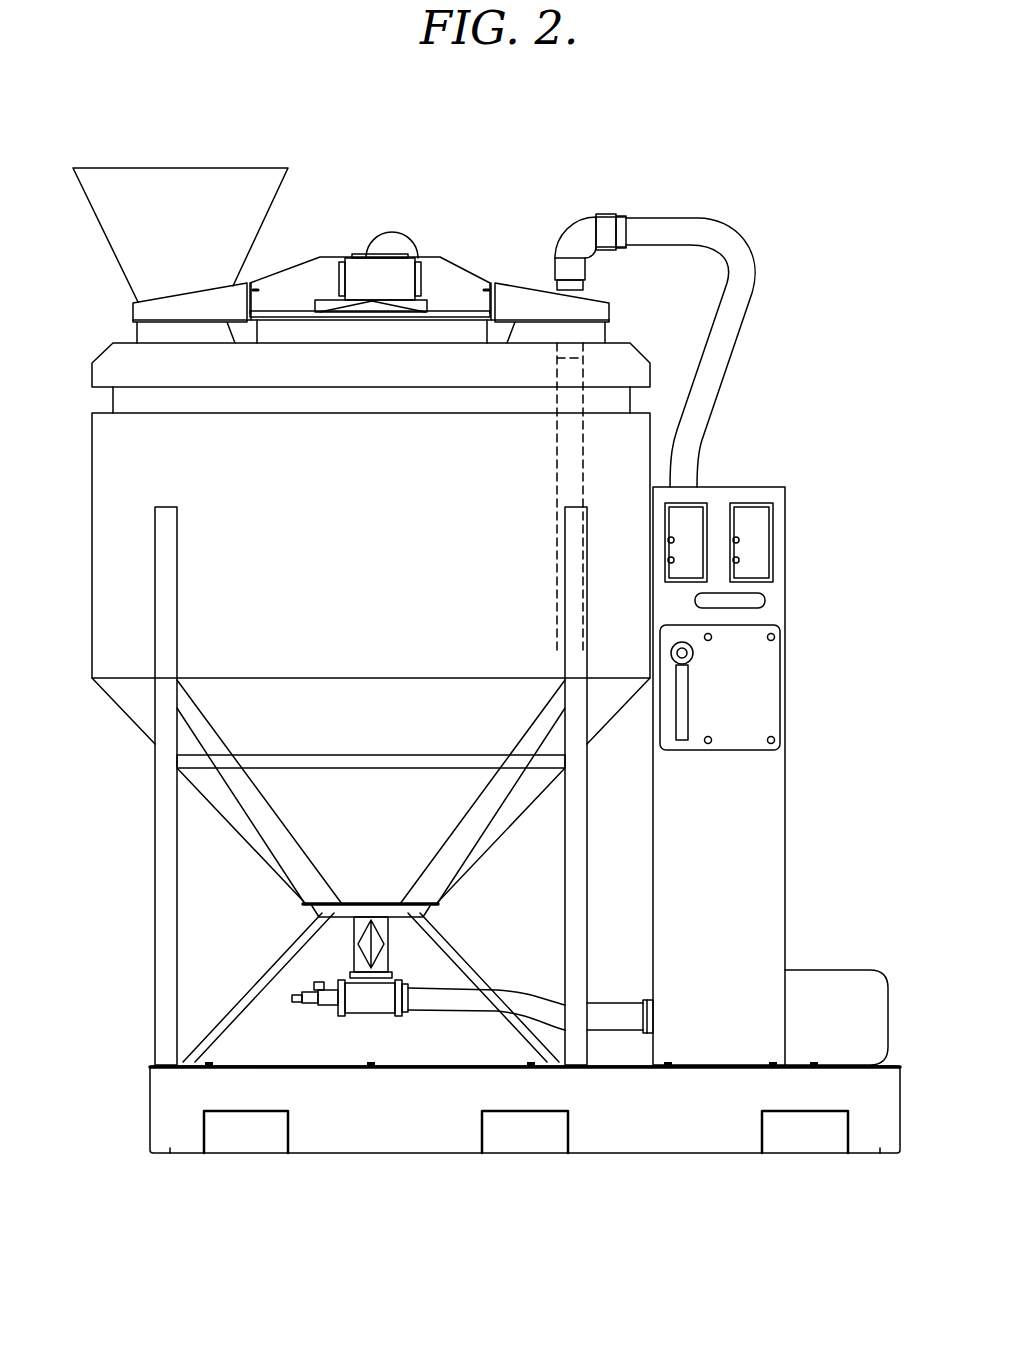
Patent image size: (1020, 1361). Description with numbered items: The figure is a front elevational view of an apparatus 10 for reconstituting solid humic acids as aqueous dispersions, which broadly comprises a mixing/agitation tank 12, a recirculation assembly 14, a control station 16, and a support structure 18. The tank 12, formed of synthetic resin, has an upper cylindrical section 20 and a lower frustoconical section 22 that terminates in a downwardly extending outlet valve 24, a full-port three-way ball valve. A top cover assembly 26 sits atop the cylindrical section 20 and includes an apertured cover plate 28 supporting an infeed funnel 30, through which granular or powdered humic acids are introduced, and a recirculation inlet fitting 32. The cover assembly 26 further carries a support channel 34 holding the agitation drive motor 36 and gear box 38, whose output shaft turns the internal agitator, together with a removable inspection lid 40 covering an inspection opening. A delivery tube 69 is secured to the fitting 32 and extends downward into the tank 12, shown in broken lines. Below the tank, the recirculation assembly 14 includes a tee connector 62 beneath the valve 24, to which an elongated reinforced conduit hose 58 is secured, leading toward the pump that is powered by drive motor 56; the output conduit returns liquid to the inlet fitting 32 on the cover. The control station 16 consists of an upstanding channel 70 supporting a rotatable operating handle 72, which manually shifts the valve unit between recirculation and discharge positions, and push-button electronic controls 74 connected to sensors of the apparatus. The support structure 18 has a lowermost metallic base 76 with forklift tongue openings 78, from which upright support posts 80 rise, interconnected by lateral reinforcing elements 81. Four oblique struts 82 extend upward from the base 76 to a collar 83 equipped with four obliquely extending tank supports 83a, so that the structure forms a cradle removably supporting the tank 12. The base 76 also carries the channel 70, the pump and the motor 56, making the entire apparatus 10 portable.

The apparatus 10 is at (724, 155).
The mixing/agitation tank 12 is at (663, 439).
The recirculation assembly 14 is at (825, 919).
The control station 16 is at (796, 691).
The support structure 18 is at (132, 1024).
The upper cylindrical section 20 is at (107, 476).
The lower frustoconical section 22 is at (138, 710).
The outlet valve 24 is at (386, 945).
The top cover assembly 26 is at (451, 193).
The apertured cover plate 28 is at (130, 345).
The infeed funnel 30 is at (180, 176).
The recirculation inlet fitting 32 is at (577, 233).
The support channel 34 is at (481, 322).
The agitation drive motor 36 is at (397, 247).
The gear box 38 is at (366, 264).
The removable inspection lid 40 is at (333, 303).
The drive motor 56 is at (818, 978).
The conduit hose 58 is at (470, 1010).
The tee connector 62 is at (378, 1006).
The delivery tube 69 is at (565, 463).
The upstanding channel 70 is at (786, 804).
The rotatable operating handle 72 is at (683, 720).
The push-button electronic controls 74 is at (752, 512).
The base 76 is at (660, 1138).
The forklift tongue openings 78 is at (285, 1138).
The upright support posts 80 is at (578, 797).
The lateral reinforcing elements 81 is at (400, 756).
The oblique struts 82 is at (468, 962).
The collar 83 is at (348, 913).
The tank supports 83a is at (265, 820).